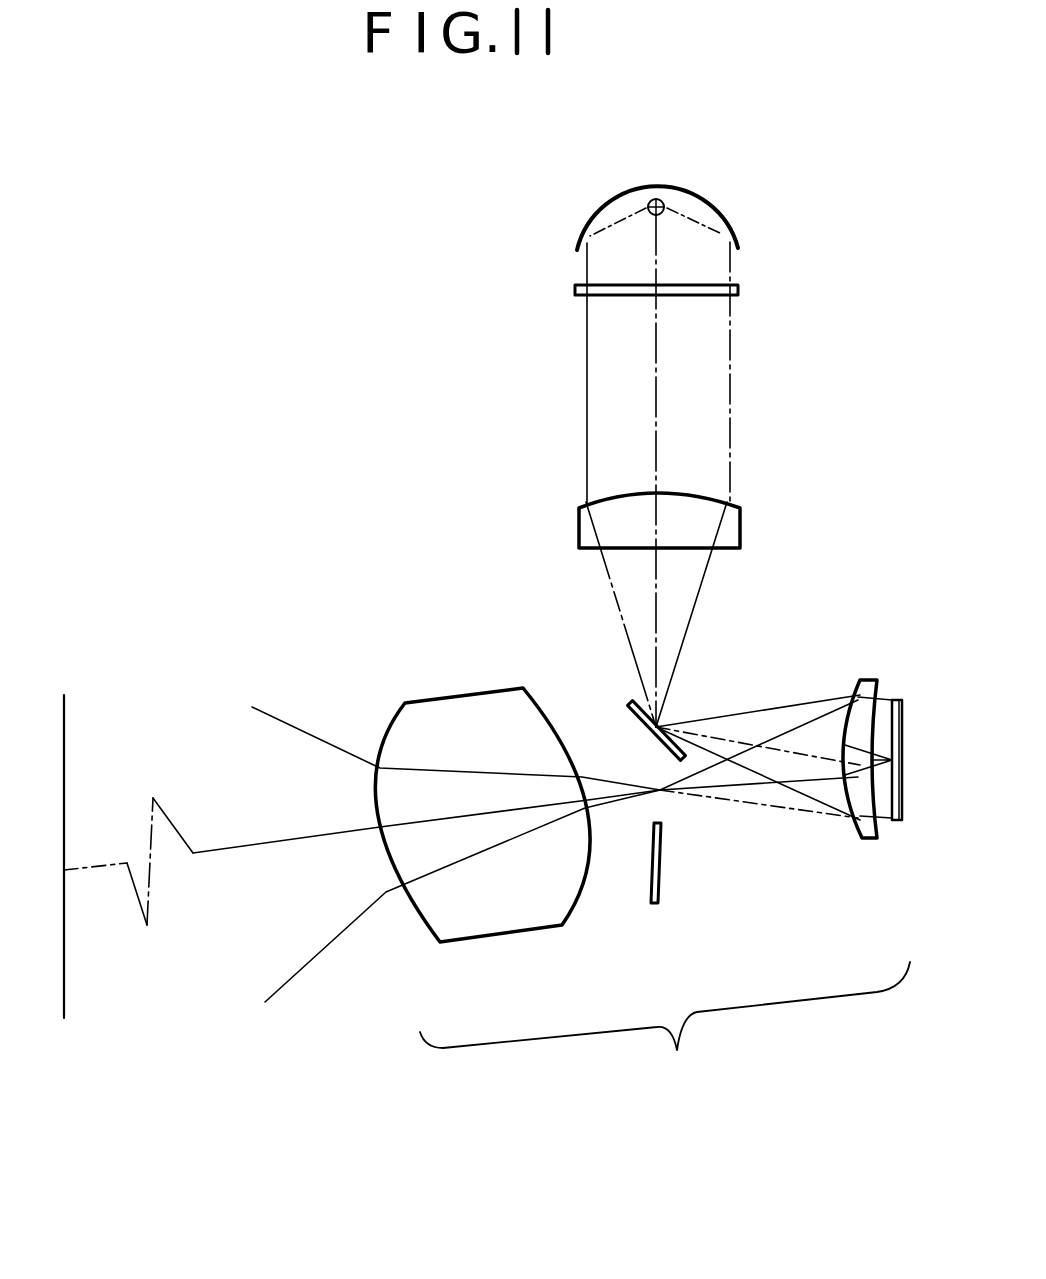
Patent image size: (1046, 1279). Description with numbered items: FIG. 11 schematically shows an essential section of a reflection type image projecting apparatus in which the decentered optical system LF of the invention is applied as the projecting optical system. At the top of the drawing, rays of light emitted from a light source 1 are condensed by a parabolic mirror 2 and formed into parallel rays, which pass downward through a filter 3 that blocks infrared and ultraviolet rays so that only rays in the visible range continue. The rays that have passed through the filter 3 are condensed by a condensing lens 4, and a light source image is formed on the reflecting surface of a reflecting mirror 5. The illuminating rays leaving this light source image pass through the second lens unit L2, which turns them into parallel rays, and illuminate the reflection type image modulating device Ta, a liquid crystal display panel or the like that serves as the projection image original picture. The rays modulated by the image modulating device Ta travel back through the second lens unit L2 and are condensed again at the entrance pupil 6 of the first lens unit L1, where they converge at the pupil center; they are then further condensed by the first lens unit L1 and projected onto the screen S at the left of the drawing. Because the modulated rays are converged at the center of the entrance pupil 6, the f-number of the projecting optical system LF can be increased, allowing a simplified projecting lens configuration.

The light source 1 is at (662, 202).
The parabolic mirror 2 is at (712, 212).
The filter 3 is at (740, 290).
The condensing lens 4 is at (742, 522).
The reflecting mirror 5 is at (630, 702).
The entrance pupil 6 is at (662, 857).
The first lens unit L1 is at (482, 688).
The second lens unit L2 is at (866, 680).
The screen S is at (64, 757).
The reflection type image modulating device Ta is at (897, 823).
The decentered optical system LF is at (665, 1030).